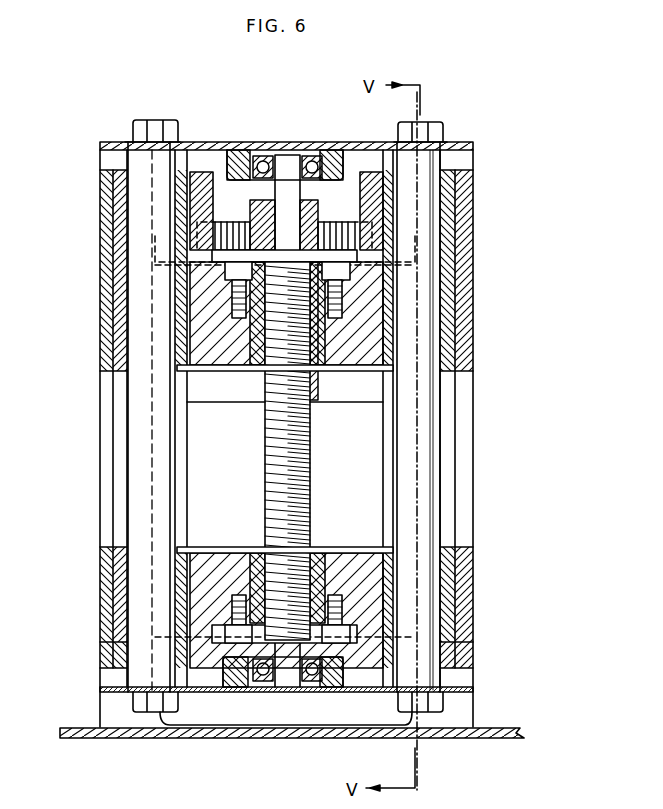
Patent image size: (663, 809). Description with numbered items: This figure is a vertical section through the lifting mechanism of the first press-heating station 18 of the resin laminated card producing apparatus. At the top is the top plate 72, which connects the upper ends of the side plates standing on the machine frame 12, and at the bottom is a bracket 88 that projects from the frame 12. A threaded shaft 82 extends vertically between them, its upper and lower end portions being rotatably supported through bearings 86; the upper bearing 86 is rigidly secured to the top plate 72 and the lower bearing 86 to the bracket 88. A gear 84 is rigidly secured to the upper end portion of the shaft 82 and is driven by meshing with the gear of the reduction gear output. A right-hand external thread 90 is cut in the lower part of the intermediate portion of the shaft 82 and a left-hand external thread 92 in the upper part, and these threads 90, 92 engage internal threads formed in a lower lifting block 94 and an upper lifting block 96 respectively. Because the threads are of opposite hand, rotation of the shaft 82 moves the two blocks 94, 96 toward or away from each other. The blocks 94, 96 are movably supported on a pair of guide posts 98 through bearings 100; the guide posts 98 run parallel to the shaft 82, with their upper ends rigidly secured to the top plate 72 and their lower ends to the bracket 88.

The machine frame 12 is at (247, 738).
The first press-heating station 18 is at (488, 354).
The top plate 72 is at (368, 142).
The threaded shaft 82 is at (298, 460).
The gear 84 is at (351, 240).
The bearings 86 is at (303, 150).
The bracket 88 is at (190, 692).
The right-hand external thread 90 is at (306, 528).
The left-hand external thread 92 is at (275, 421).
The lower lifting block 94 is at (255, 553).
The upper lifting block 96 is at (233, 371).
The guide posts 98 is at (142, 489).
The bearings 100 is at (100, 224).